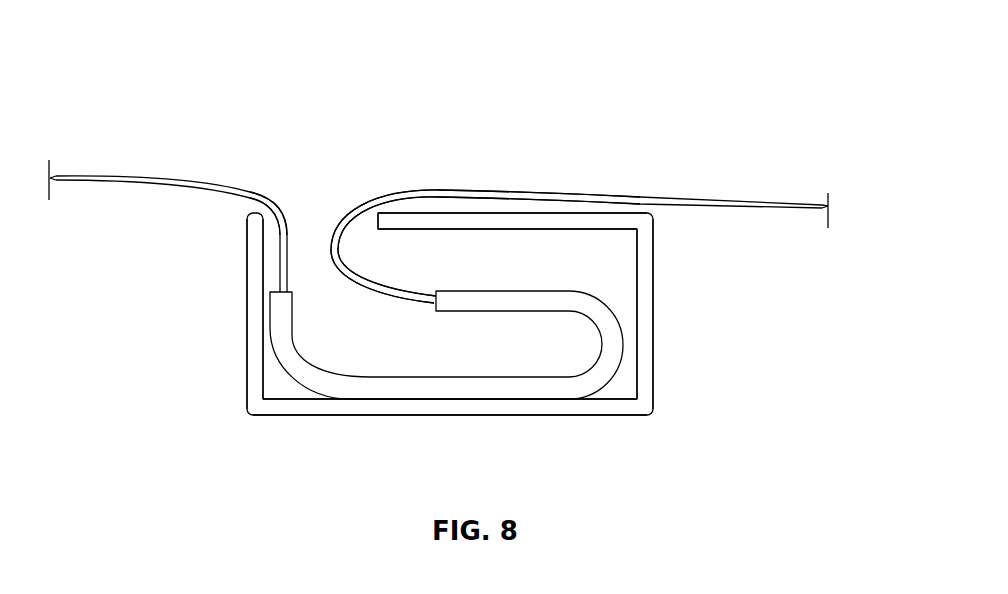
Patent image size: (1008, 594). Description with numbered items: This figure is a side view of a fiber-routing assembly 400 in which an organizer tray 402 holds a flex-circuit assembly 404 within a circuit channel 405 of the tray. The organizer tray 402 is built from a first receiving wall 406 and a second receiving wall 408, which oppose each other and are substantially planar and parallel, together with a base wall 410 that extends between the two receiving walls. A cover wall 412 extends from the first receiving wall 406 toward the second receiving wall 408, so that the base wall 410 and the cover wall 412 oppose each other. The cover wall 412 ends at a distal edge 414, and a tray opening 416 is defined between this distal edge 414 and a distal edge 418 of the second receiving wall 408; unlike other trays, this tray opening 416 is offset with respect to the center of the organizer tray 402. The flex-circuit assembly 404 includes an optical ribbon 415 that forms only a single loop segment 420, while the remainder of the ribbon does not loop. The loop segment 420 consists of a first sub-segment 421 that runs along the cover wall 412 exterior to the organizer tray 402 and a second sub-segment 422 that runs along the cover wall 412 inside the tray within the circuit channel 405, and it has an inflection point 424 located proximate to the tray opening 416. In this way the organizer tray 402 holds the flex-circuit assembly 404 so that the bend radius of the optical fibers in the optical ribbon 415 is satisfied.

The fiber-routing assembly 400 is at (732, 60).
The organizer tray 402 is at (692, 337).
The flex-circuit assembly 404 is at (413, 170).
The circuit channel 405 is at (533, 273).
The first receiving wall 406 is at (654, 281).
The second receiving wall 408 is at (247, 315).
The base wall 410 is at (563, 416).
The cover wall 412 is at (587, 222).
The distal edge 414 is at (375, 222).
The optical ribbon 415 is at (118, 177).
The tray opening 416 is at (308, 215).
The distal edge 418 is at (250, 195).
The loop segment 420 is at (508, 173).
The first sub-segment 421 is at (467, 190).
The second sub-segment 422 is at (433, 302).
The inflection point 424 is at (327, 240).